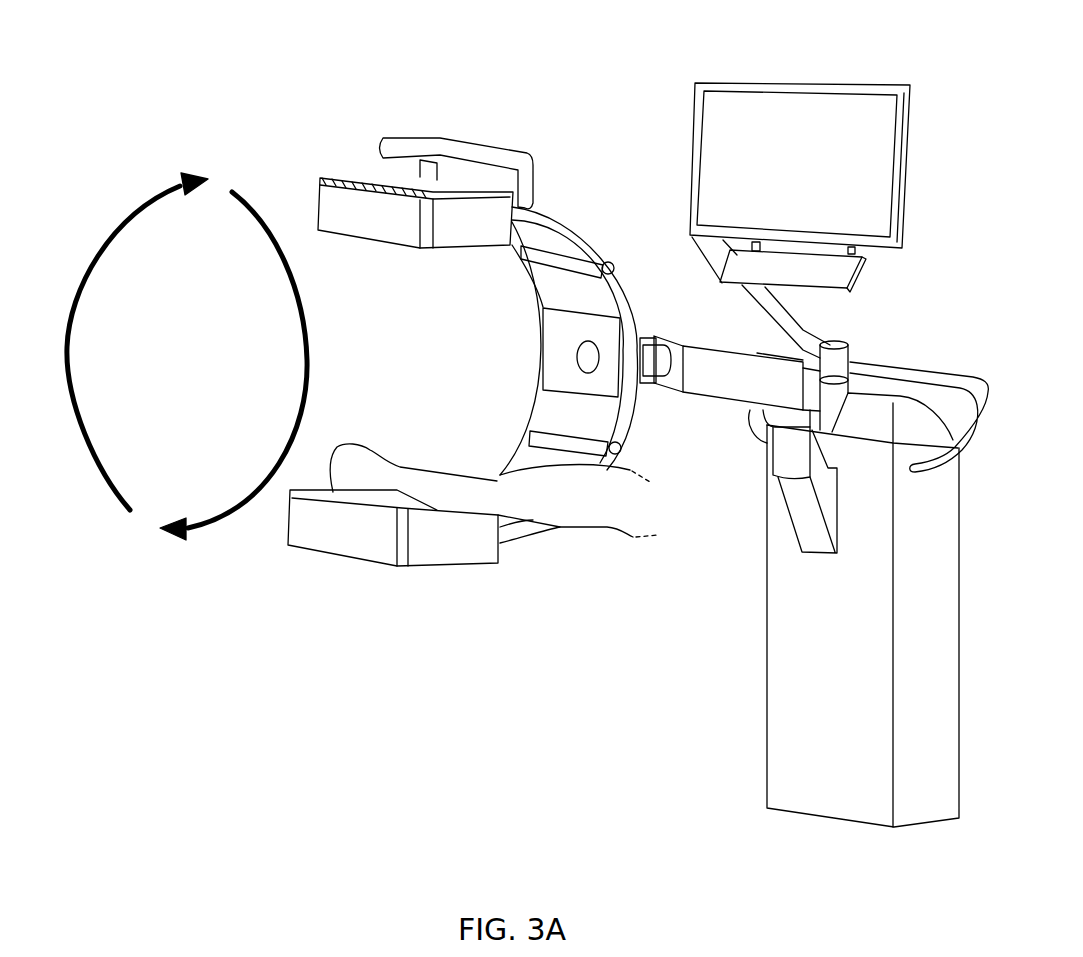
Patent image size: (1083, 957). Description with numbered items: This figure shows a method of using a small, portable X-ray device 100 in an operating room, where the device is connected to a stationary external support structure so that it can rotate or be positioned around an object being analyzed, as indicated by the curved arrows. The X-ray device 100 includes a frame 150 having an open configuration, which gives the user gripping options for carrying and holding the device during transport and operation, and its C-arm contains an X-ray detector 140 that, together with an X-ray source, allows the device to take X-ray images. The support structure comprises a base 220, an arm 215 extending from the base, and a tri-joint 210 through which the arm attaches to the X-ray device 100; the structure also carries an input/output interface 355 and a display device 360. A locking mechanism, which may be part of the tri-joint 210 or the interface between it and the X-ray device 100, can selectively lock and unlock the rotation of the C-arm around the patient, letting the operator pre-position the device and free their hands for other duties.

The X-ray device 100 is at (268, 55).
The frame 150 is at (571, 205).
The X-ray detector 140 is at (390, 500).
The tri-joint 210 is at (651, 325).
The arm 215 is at (746, 389).
The base 220 is at (863, 667).
The display device 360 is at (926, 176).
The input/output interface 355 is at (886, 271).